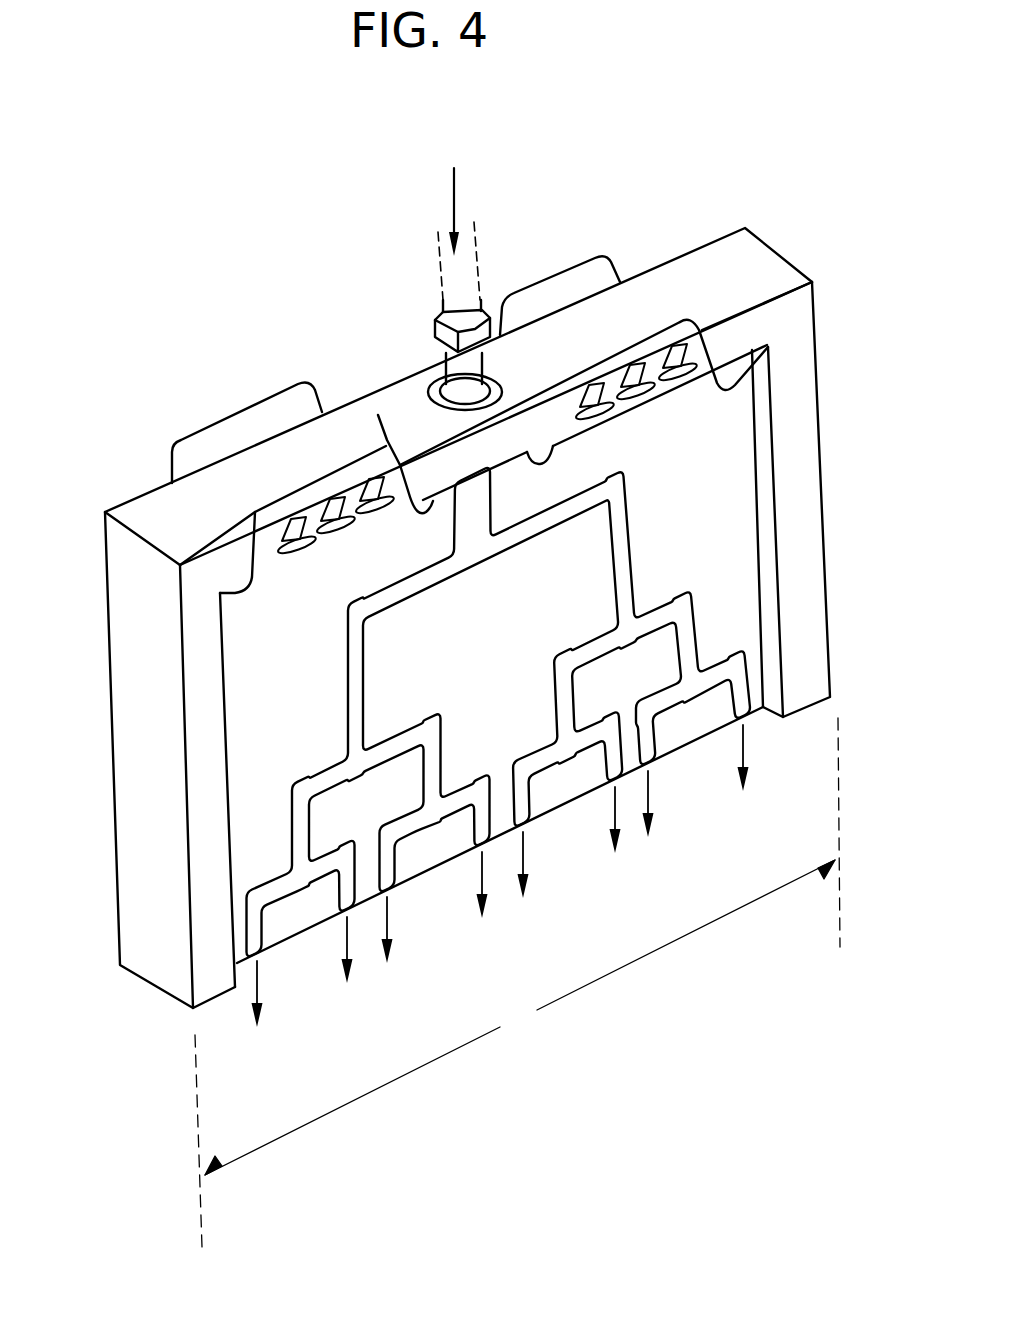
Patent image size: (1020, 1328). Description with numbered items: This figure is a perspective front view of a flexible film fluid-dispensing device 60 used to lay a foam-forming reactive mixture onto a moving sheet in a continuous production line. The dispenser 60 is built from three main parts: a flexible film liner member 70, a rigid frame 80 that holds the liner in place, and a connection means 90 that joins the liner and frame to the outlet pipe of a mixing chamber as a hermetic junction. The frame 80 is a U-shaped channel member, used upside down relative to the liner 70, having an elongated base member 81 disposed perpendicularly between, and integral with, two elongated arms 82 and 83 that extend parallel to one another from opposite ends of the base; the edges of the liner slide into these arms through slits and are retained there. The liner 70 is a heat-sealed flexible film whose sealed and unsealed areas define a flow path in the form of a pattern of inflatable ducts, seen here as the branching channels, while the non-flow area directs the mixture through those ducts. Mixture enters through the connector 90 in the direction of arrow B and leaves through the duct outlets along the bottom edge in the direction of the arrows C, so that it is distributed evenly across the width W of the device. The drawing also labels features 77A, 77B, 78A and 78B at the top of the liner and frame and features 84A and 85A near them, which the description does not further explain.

The flexible film fluid-dispensing device 60 is at (390, 213).
The flexible film liner member 70 is at (726, 528).
The first front terminal tab 77A is at (262, 511).
The first rear terminal tab 77B is at (270, 413).
The second front terminal tab 78A is at (644, 356).
The second rear terminal tab 78B is at (582, 276).
The rigid frame 80 is at (824, 362).
The elongated base member 81 is at (237, 473).
The elongated arm 82 is at (145, 743).
The elongated arm 83 is at (805, 598).
The first set of apertures 84A is at (378, 415).
The second set of apertures 85A is at (662, 386).
The connection means 90 is at (495, 262).
The directional arrow B is at (457, 197).
The directional arrow C is at (261, 981).
The width dimension W is at (517, 982).